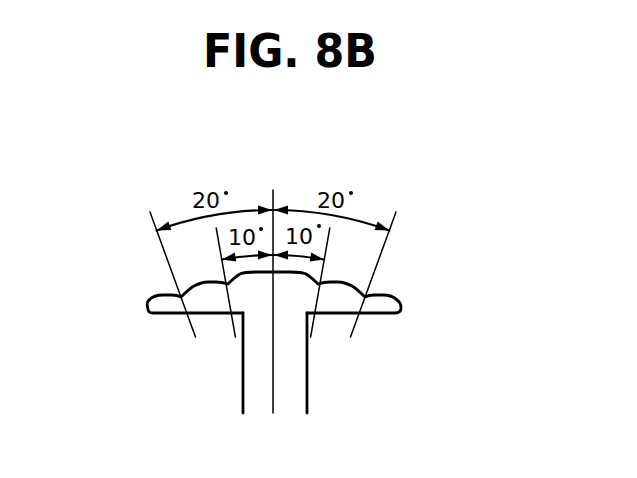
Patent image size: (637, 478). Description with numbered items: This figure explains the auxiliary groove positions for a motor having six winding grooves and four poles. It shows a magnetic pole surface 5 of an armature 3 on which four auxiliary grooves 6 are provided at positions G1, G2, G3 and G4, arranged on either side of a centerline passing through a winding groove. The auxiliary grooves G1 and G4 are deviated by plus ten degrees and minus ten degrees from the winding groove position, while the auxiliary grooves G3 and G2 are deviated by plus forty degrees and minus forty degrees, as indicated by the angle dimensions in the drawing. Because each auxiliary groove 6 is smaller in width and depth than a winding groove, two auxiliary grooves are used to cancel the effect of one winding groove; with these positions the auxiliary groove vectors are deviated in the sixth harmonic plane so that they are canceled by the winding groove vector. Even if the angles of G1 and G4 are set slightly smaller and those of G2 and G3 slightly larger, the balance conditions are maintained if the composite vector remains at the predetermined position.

The armature 3 is at (247, 388).
The magnetic pole surface 5 is at (316, 252).
The auxiliary grooves 6 is at (366, 294).
The auxiliary groove G1 is at (396, 284).
The auxiliary groove G2 is at (348, 266).
The auxiliary groove G3 is at (202, 264).
The auxiliary groove G4 is at (152, 284).